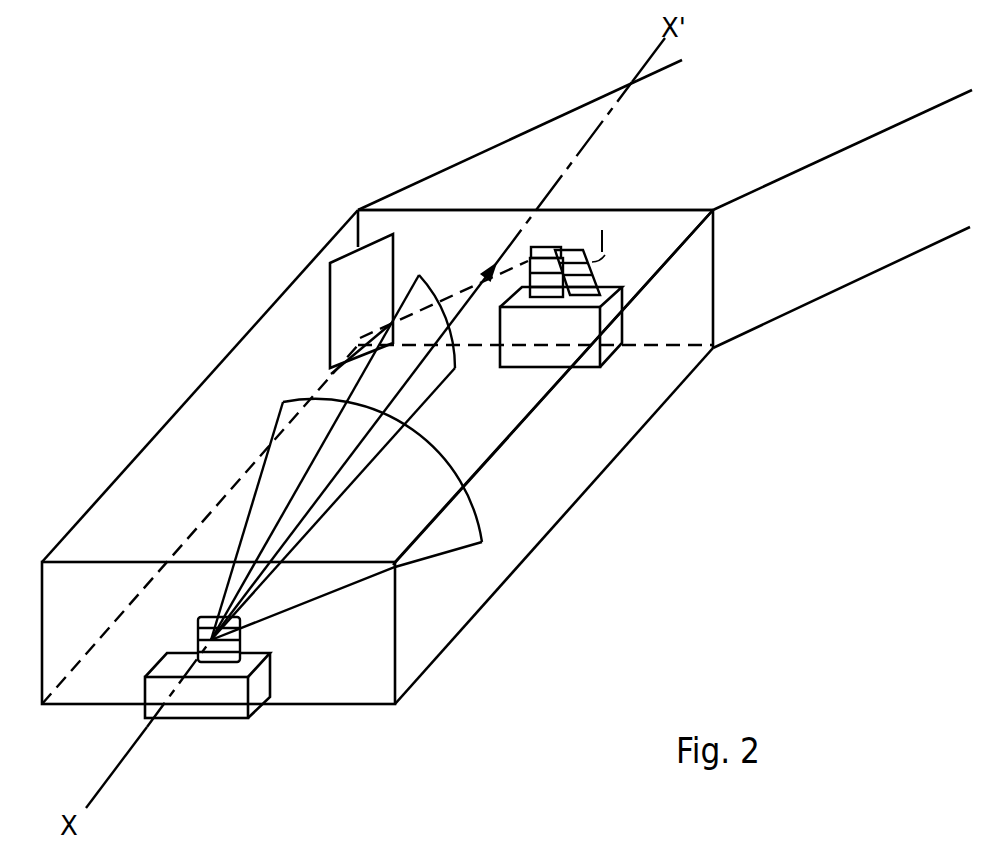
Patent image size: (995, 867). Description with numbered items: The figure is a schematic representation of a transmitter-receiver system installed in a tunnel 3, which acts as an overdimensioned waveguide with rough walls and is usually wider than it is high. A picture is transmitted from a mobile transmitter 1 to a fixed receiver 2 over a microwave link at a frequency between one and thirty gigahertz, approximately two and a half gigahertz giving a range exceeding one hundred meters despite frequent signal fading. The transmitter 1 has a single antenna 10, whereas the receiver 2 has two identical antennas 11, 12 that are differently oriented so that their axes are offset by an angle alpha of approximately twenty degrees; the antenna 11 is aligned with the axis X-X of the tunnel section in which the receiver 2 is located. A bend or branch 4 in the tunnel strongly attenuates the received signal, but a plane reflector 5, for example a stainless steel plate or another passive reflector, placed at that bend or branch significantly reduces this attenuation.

The transmitter 1 is at (270, 665).
The receiver 2 is at (622, 318).
The duct 3 is at (572, 503).
The bend or branch 4 is at (635, 208).
The plane reflector 5 is at (330, 307).
The antenna 10 is at (198, 638).
The antenna 11 is at (543, 247).
The antenna 12 is at (590, 274).